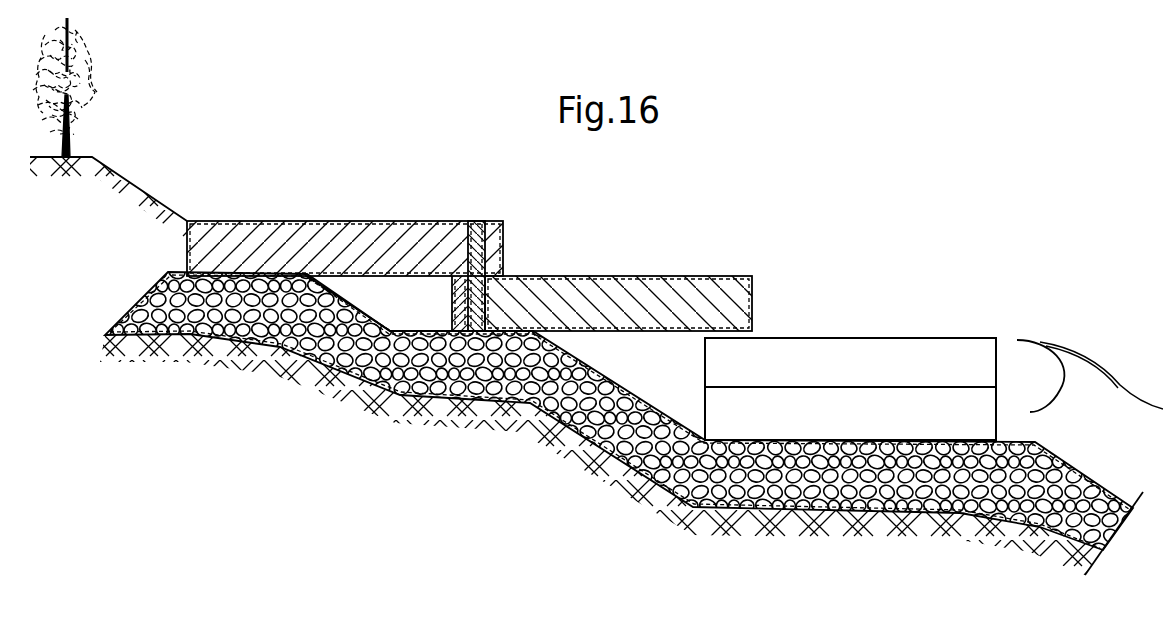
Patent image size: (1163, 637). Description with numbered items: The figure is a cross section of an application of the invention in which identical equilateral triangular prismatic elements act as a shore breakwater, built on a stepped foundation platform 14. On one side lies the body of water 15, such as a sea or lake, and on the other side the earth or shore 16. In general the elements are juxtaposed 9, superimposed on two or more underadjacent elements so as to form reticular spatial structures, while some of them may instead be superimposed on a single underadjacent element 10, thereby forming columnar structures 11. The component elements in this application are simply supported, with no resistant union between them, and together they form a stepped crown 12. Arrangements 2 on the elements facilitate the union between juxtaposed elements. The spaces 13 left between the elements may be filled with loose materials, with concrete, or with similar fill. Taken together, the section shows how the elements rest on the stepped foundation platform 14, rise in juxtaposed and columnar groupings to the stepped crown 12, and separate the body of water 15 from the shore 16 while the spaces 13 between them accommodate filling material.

The union arrangements 2 is at (478, 221).
The juxtaposed elements 9 is at (387, 222).
The single underadjacent element 10 is at (930, 417).
The columnar structures 11 is at (852, 388).
The stepped crown 12 is at (305, 220).
The spaces 13 is at (417, 316).
The stepped foundation platform 14 is at (280, 345).
The body of water 15 is at (1110, 397).
The earth shore 16 is at (138, 190).